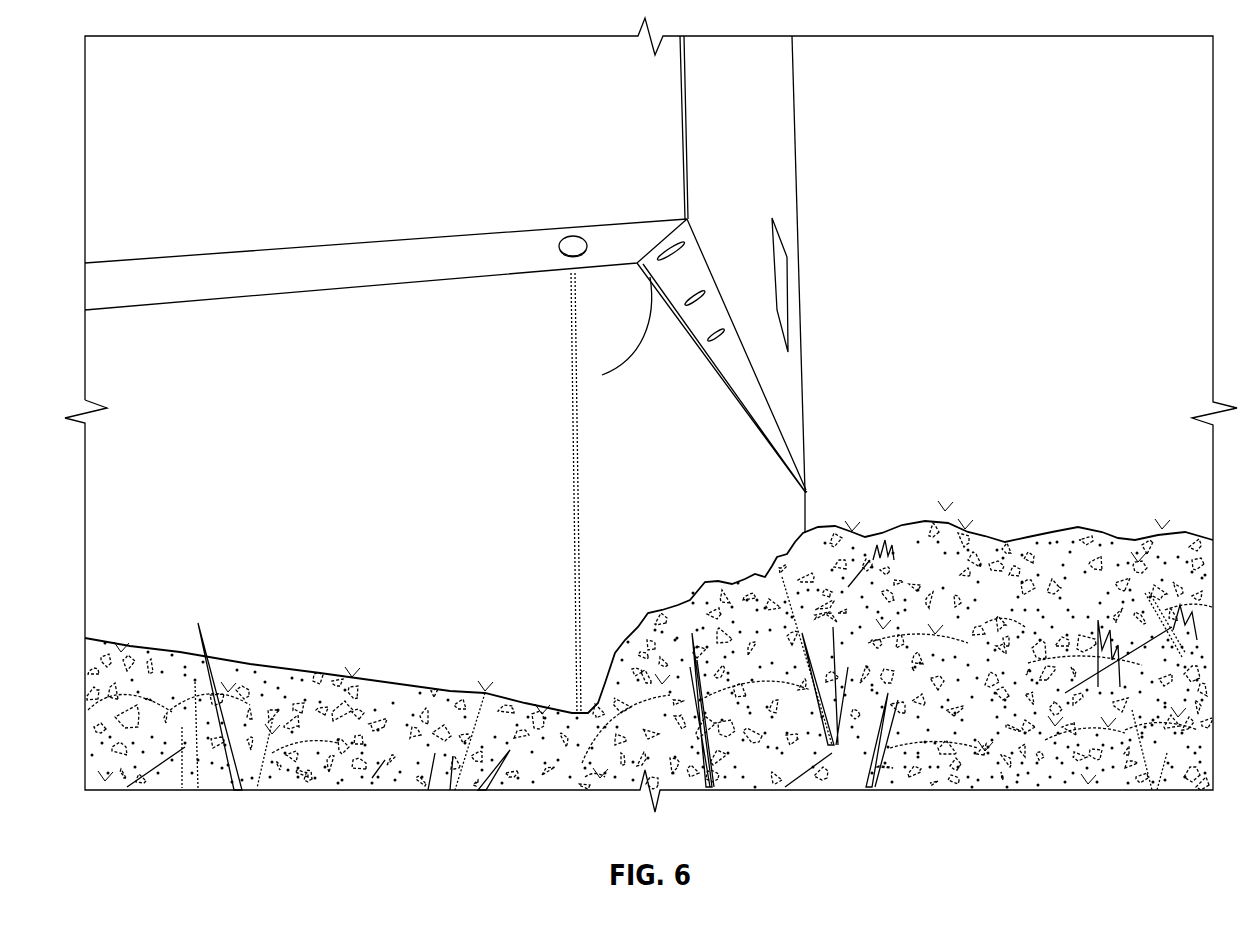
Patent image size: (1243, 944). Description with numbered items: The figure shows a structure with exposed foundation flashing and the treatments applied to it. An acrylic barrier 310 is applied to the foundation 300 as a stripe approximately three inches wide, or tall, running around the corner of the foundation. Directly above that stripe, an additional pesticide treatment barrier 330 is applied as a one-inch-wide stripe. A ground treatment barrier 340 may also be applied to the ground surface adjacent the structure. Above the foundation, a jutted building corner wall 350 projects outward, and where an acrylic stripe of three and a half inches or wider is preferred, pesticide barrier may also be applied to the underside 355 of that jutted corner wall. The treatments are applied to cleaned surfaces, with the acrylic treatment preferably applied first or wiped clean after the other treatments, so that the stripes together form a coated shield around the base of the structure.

The foundation 300 is at (775, 515).
The acrylic barrier 310 is at (293, 590).
The pesticide treatment barrier 330 is at (649, 272).
The ground treatment barrier 340 is at (971, 653).
The jutted building corner wall 350 is at (554, 148).
The underside 355 is at (485, 272).